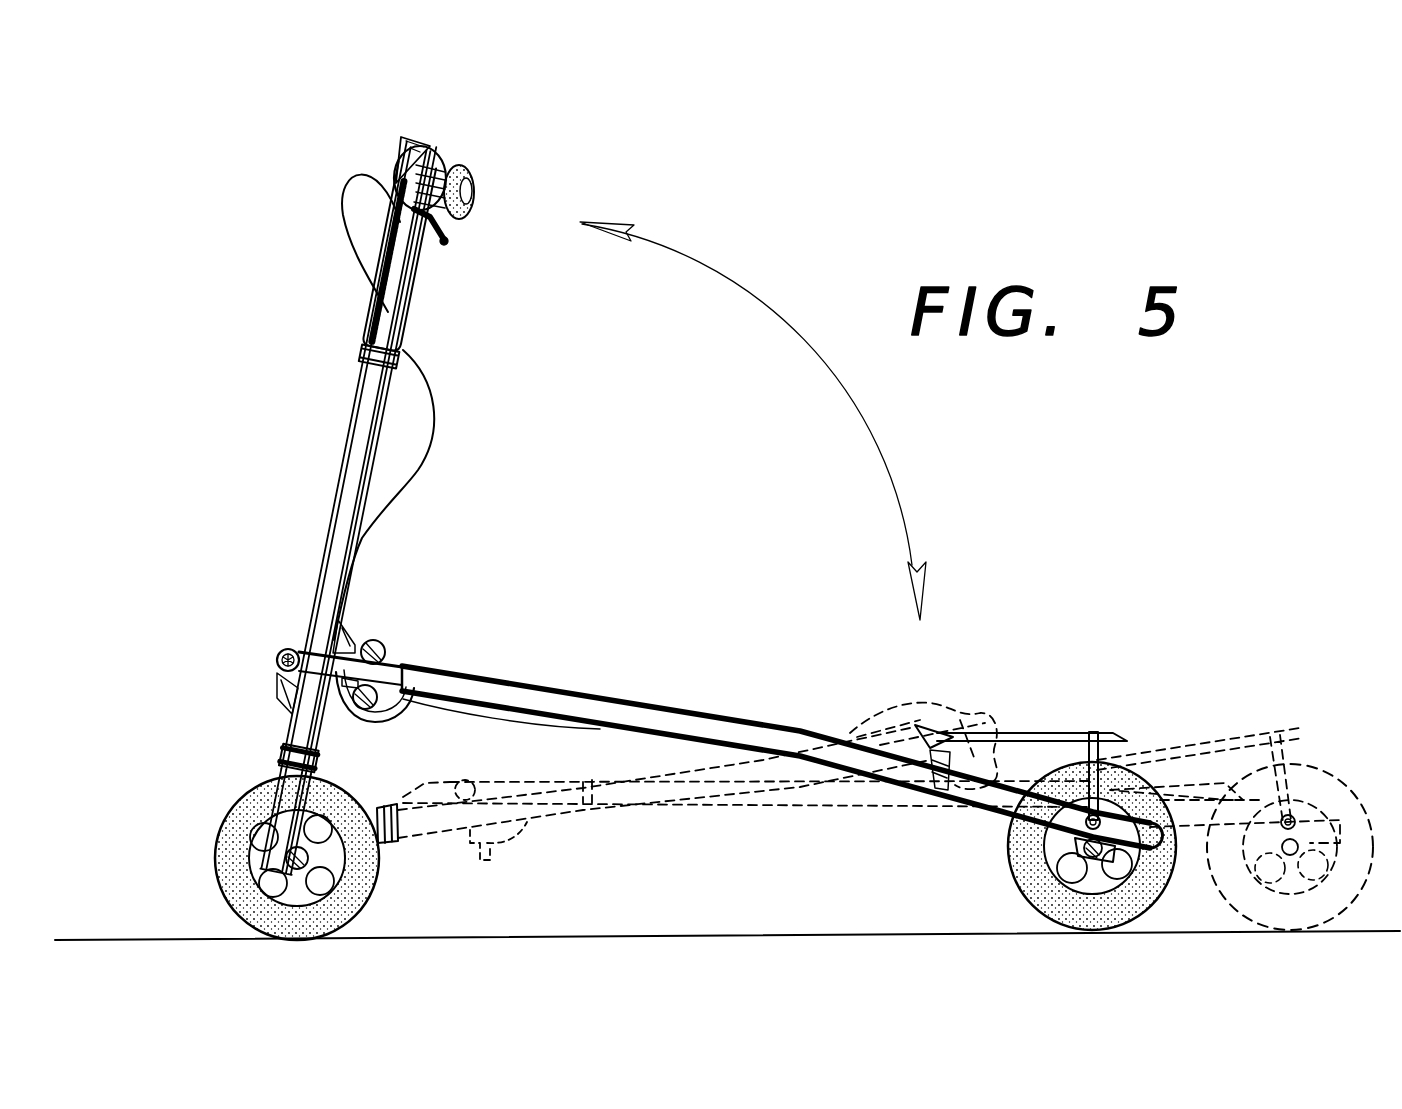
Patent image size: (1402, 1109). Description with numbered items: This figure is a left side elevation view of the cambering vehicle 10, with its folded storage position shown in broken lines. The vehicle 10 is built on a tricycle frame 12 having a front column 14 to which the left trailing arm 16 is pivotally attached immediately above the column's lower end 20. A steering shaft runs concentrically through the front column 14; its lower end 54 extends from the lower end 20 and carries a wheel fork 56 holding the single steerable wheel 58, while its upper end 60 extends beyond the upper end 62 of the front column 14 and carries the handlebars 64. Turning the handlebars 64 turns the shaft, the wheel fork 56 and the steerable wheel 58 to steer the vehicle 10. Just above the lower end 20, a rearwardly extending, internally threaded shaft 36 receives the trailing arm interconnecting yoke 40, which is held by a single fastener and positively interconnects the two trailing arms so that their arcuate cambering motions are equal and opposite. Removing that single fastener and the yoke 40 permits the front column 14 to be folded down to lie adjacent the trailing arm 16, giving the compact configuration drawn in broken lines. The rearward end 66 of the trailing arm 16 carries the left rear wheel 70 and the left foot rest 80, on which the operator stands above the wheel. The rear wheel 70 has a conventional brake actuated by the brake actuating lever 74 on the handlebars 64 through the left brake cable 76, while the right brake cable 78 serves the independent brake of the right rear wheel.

The cambering vehicle 10 is at (974, 433).
The tricycle frame 12 is at (258, 629).
The front column 14 is at (340, 492).
The left trailing arm 16 is at (601, 727).
The lower end of front column 20 is at (334, 735).
The internally threaded shaft 36 is at (482, 862).
The trailing arm interconnecting yoke 40 is at (379, 650).
The lower end of steering shaft 54 is at (281, 766).
The wheel fork 56 is at (280, 800).
The steerable wheel 58 is at (224, 894).
The upper end of steering shaft 60 is at (404, 305).
The upper end of front column 62 is at (360, 366).
The handlebars 64 is at (440, 164).
The rearward end of left trailing arm 66 is at (1100, 833).
The left rear wheel 70 is at (1150, 906).
The brake actuating lever 74 is at (448, 243).
The left brake cable 76 is at (412, 208).
The right brake cable 78 is at (432, 403).
The left foot rest 80 is at (1225, 735).